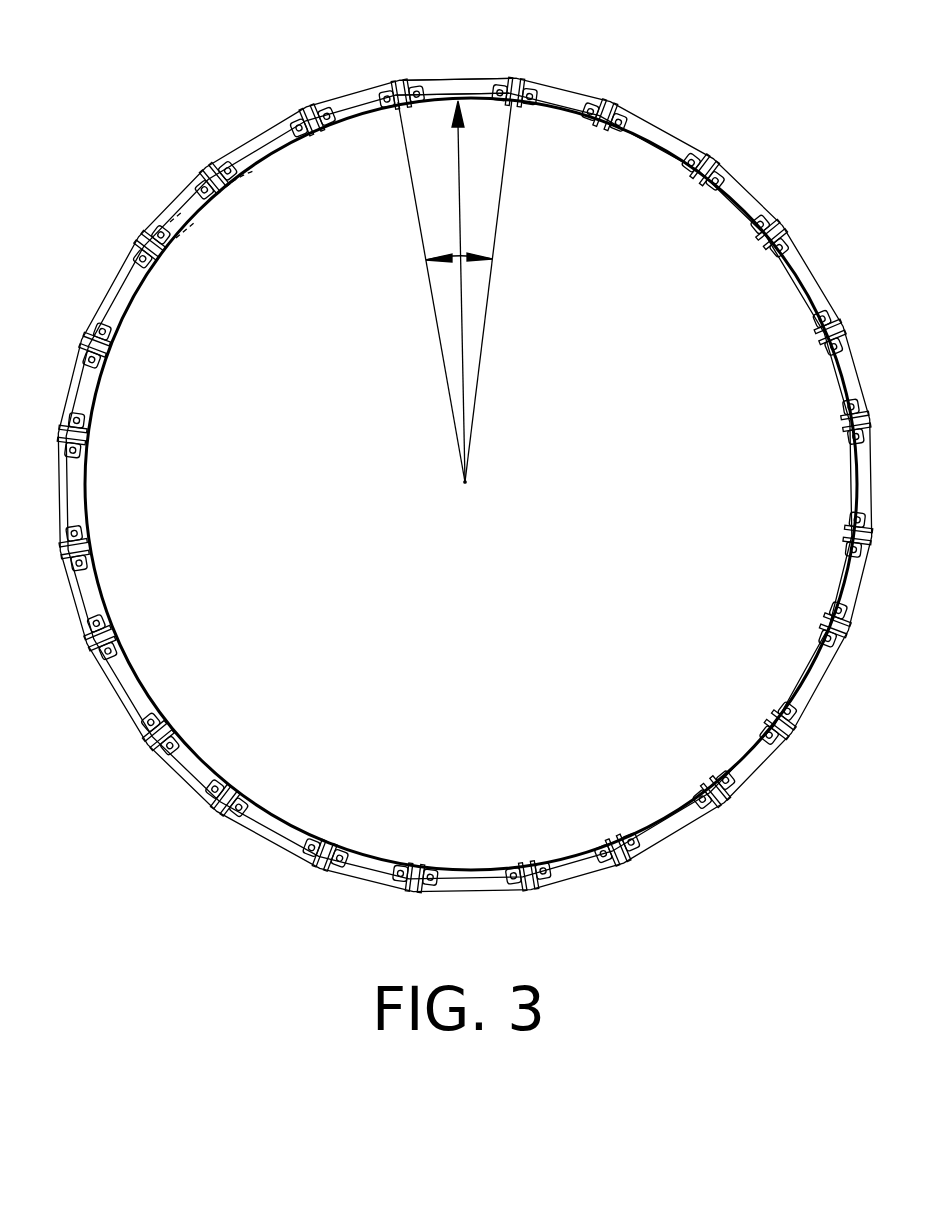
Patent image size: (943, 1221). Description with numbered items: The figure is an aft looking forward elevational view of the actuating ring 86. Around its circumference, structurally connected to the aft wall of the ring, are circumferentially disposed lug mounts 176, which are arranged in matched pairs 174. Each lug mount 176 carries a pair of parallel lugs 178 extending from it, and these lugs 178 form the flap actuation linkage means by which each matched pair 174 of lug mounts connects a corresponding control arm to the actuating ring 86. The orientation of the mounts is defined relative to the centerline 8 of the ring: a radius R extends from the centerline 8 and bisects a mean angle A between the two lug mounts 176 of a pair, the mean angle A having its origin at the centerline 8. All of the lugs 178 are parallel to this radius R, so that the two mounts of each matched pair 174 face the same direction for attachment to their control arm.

The actuating ring 86 is at (735, 198).
The matched pair of lug mounts 174 is at (497, 78).
The lug mount 176 is at (407, 155).
The lug 178 is at (506, 76).
The centerline 8 is at (467, 481).
The radius R is at (462, 343).
The mean angle A is at (468, 257).